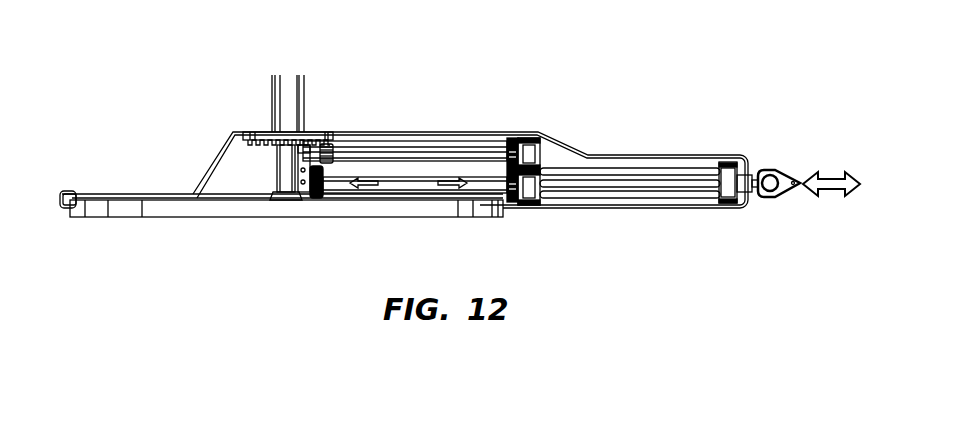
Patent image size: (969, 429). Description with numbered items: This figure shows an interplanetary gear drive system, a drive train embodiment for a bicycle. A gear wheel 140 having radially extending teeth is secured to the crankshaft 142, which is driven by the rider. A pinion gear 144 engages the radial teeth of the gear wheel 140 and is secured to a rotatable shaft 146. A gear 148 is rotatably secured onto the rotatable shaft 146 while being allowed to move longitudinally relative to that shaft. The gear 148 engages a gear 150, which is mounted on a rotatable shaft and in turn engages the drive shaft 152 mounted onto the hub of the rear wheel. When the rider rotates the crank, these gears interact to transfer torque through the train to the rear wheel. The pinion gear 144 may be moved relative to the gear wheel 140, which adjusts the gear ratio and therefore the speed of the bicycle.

The gear wheel 140 is at (210, 217).
The crankshaft 142 is at (288, 163).
The pinion gear 144 is at (315, 200).
The rotatable shaft 146 is at (483, 185).
The gear 148 is at (540, 202).
The gear 150 is at (502, 170).
The drive shaft 152 is at (288, 86).